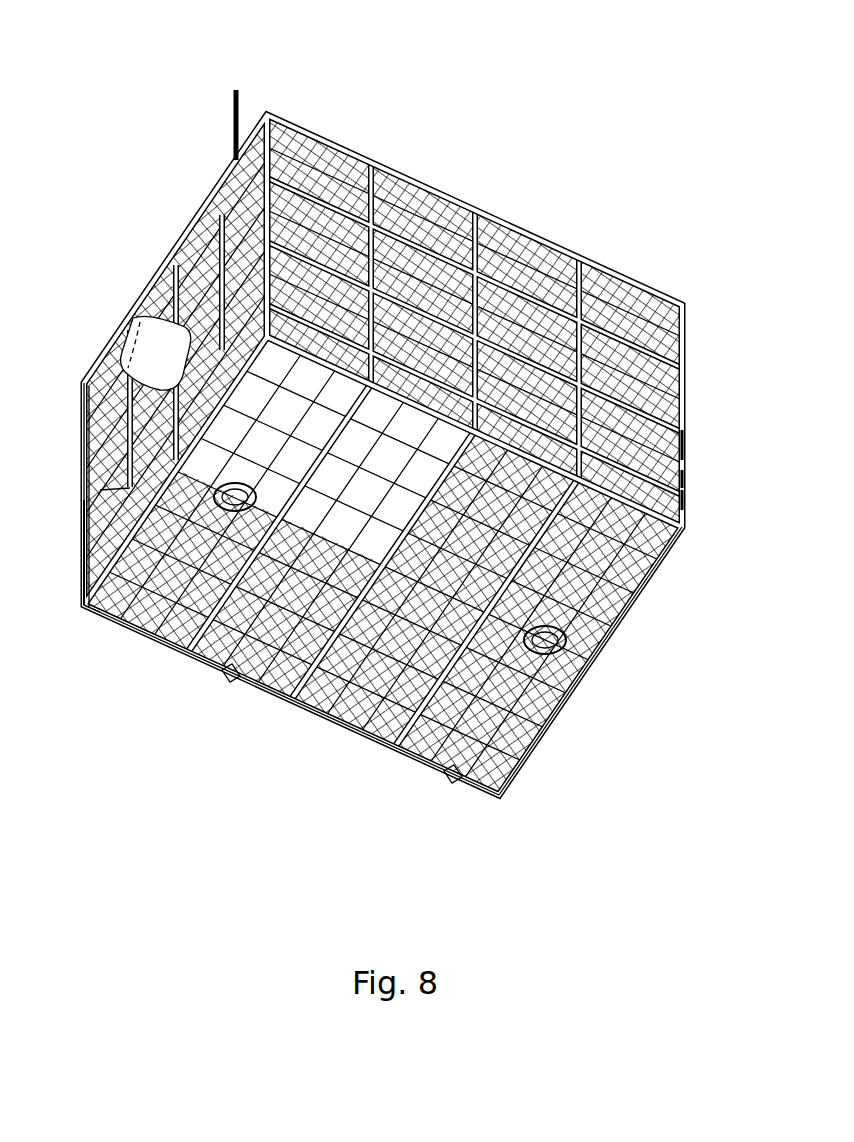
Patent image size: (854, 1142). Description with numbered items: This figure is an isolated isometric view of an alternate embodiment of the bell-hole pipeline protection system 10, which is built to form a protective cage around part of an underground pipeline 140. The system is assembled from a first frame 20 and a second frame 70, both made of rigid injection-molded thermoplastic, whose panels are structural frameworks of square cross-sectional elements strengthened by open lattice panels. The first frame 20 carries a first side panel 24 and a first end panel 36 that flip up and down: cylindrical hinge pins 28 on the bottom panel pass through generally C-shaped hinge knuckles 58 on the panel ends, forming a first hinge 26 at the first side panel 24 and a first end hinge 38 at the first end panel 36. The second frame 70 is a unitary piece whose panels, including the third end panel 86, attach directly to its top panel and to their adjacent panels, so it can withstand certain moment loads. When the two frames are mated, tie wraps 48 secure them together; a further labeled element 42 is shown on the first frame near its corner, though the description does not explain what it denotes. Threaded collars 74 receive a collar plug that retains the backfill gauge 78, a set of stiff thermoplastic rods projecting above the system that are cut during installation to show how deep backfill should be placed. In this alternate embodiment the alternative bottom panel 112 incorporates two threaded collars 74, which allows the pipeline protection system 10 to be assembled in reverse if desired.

The pipeline protection system 10 is at (96, 153).
The first frame 20 is at (690, 540).
The first side panel 24 is at (684, 448).
The first hinge 26 is at (656, 560).
The hinge pins 28 is at (228, 674).
The first end panel 36 is at (83, 538).
The first end hinge 38 is at (85, 580).
The corner post 42 is at (83, 394).
The tie wraps 48 is at (684, 481).
The hinge knuckles 58 is at (686, 498).
The second frame 70 is at (697, 348).
The threaded collars 74 is at (100, 490).
The backfill gauge 78 is at (232, 120).
The third end panel 86 is at (83, 410).
The bottom panel 112 is at (290, 702).
The pipeline 140 is at (133, 343).